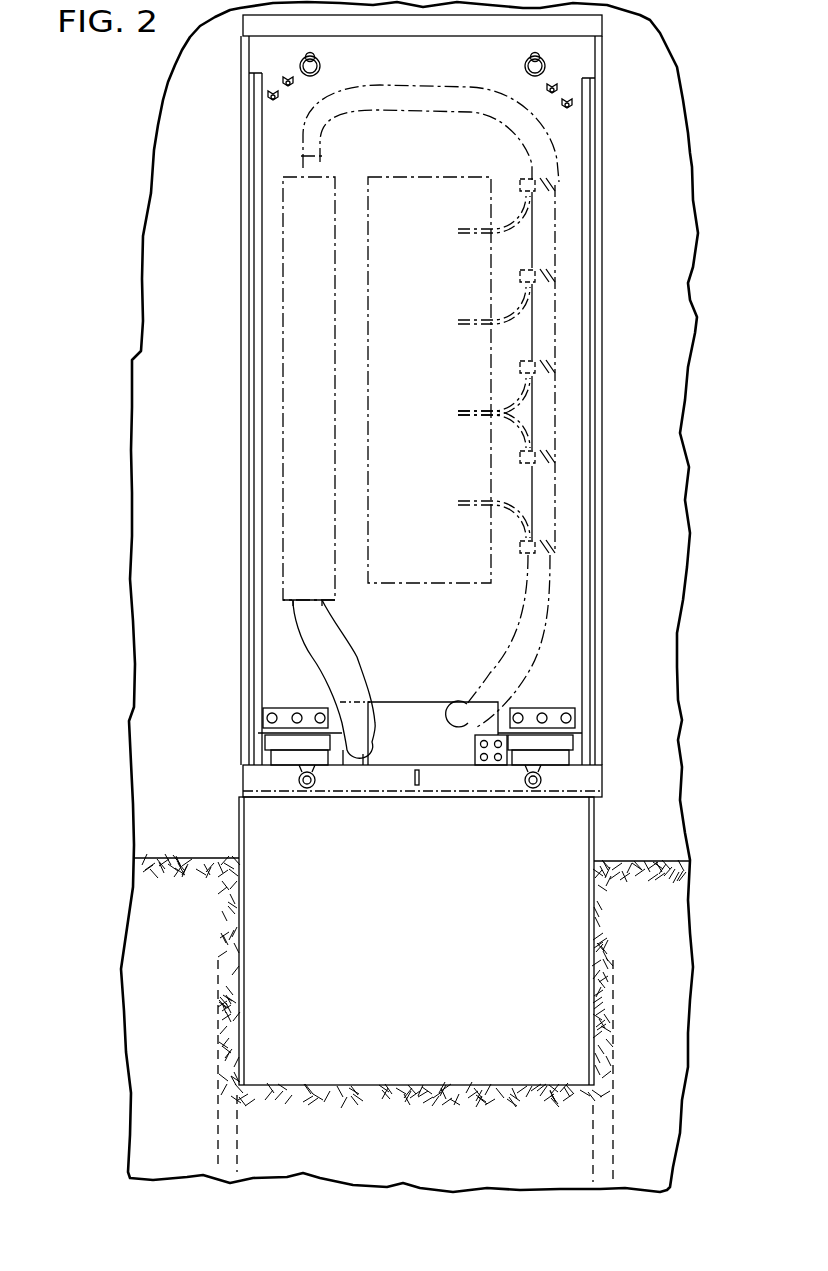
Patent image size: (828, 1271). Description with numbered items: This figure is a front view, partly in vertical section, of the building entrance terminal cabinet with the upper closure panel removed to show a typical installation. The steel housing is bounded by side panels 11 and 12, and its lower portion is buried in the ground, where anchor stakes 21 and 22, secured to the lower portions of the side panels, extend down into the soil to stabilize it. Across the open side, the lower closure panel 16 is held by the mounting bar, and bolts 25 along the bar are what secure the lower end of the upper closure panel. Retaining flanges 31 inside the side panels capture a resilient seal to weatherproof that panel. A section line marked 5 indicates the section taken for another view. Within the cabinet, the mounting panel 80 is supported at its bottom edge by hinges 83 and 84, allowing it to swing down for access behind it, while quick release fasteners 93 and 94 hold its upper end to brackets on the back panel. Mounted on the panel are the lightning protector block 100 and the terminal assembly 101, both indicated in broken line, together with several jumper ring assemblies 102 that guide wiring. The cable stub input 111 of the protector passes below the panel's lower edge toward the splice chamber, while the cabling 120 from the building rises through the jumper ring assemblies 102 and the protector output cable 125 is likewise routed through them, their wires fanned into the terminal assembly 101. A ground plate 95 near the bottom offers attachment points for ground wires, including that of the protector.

The section line 5- 5 is at (206, 147).
The side panel 11 is at (242, 355).
The side panel 12 is at (597, 232).
The lower closure panel 16 is at (418, 987).
The anchor stake 21 is at (222, 1087).
The anchor stake 22 is at (609, 1143).
The bolts 25 is at (306, 788).
The retaining flange 31 is at (256, 470).
The mounting panel 80 is at (424, 703).
The hinge 83 is at (286, 710).
The hinge 84 is at (532, 710).
The quick release fastener 93 is at (312, 57).
The quick release fastener 94 is at (533, 57).
The ground plate 95 is at (474, 747).
The lightning protector block 100 is at (332, 371).
The terminal assembly 101 is at (437, 371).
The jumper ring assemblies 102 is at (524, 179).
The cable stub input 111 is at (352, 651).
The cabling from the building 120 is at (480, 678).
The output cable 125 is at (440, 118).